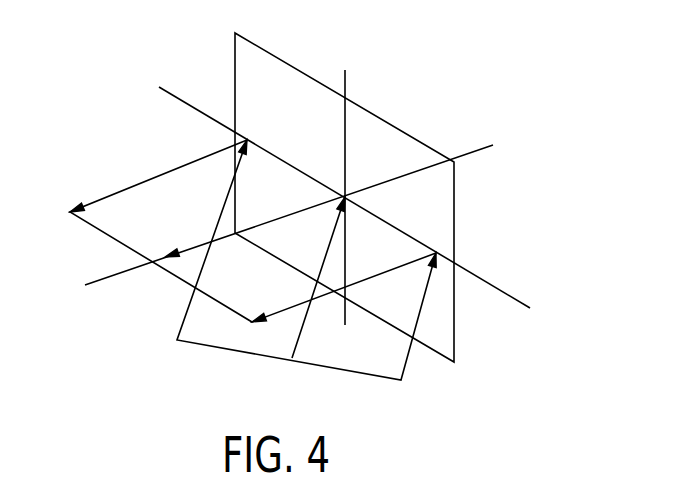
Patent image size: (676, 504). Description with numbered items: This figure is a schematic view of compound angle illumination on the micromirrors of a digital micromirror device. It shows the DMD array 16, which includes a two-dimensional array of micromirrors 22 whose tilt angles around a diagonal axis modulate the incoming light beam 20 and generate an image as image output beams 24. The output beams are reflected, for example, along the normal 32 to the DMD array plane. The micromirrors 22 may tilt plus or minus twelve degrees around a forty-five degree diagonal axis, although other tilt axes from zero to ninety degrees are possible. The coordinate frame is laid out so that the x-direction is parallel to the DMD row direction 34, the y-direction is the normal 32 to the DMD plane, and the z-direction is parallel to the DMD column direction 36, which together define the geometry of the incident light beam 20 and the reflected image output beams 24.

The DMD array 16 is at (405, 97).
The light beam 20 is at (185, 313).
The micromirrors 22 is at (273, 53).
The image output beams 24 is at (128, 187).
The normal to the DMD array plane 32 is at (108, 278).
The DMD row direction 34 is at (501, 290).
The DMD column direction 36 is at (346, 78).